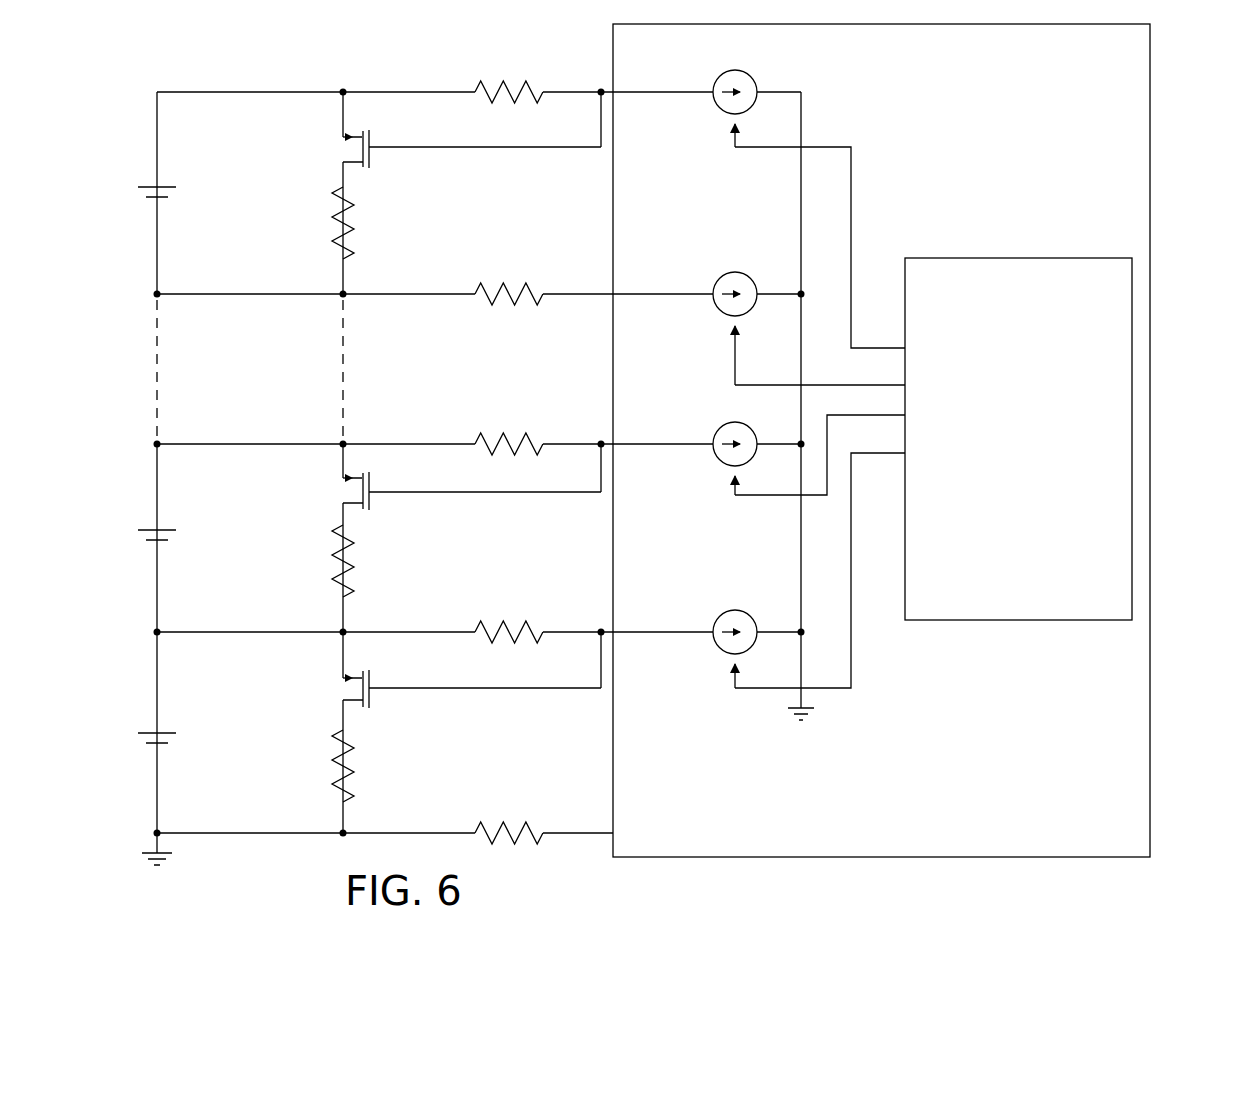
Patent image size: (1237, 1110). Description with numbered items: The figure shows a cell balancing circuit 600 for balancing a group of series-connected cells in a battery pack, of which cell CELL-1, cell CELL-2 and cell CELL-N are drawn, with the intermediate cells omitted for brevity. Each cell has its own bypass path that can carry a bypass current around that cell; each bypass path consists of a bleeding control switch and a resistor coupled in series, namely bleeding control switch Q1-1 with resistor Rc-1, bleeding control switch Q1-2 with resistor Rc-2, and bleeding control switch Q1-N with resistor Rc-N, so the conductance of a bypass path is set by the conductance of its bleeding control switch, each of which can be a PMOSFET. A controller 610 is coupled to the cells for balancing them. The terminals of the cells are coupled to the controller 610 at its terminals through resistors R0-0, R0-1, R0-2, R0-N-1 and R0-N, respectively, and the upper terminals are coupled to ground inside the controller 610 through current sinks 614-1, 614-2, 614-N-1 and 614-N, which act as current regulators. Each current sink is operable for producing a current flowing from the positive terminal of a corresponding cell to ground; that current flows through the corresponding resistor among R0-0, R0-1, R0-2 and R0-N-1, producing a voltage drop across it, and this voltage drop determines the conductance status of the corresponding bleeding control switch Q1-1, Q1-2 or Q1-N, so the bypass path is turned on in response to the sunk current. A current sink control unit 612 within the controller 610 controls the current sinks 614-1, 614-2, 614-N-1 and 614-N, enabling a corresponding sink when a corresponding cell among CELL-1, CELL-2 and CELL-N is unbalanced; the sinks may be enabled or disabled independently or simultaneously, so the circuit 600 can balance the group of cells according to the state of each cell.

The battery monitoring system 600 is at (1186, 840).
The controller 610 is at (1146, 112).
The current sink control unit 612 is at (1006, 258).
The current sink 614-N is at (712, 76).
The current sink 614-N-1 is at (713, 278).
The current sink 614-2 is at (715, 428).
The current sink 614-1 is at (716, 617).
The cell CELL-N is at (166, 200).
The cell CELL-2 is at (166, 543).
The cell CELL-1 is at (166, 746).
The bleeding control switch Q1-N is at (373, 137).
The bleeding control switch Q1-2 is at (373, 483).
The bleeding control switch Q1-1 is at (373, 678).
The resistor Rc-N is at (360, 216).
The resistor Rc-2 is at (360, 557).
The resistor Rc-1 is at (360, 757).
The resistor R0-N is at (510, 85).
The resistor R0-N-1 is at (510, 285).
The resistor R0-2 is at (512, 437).
The resistor R0-1 is at (512, 627).
The resistor R0-0 is at (512, 827).